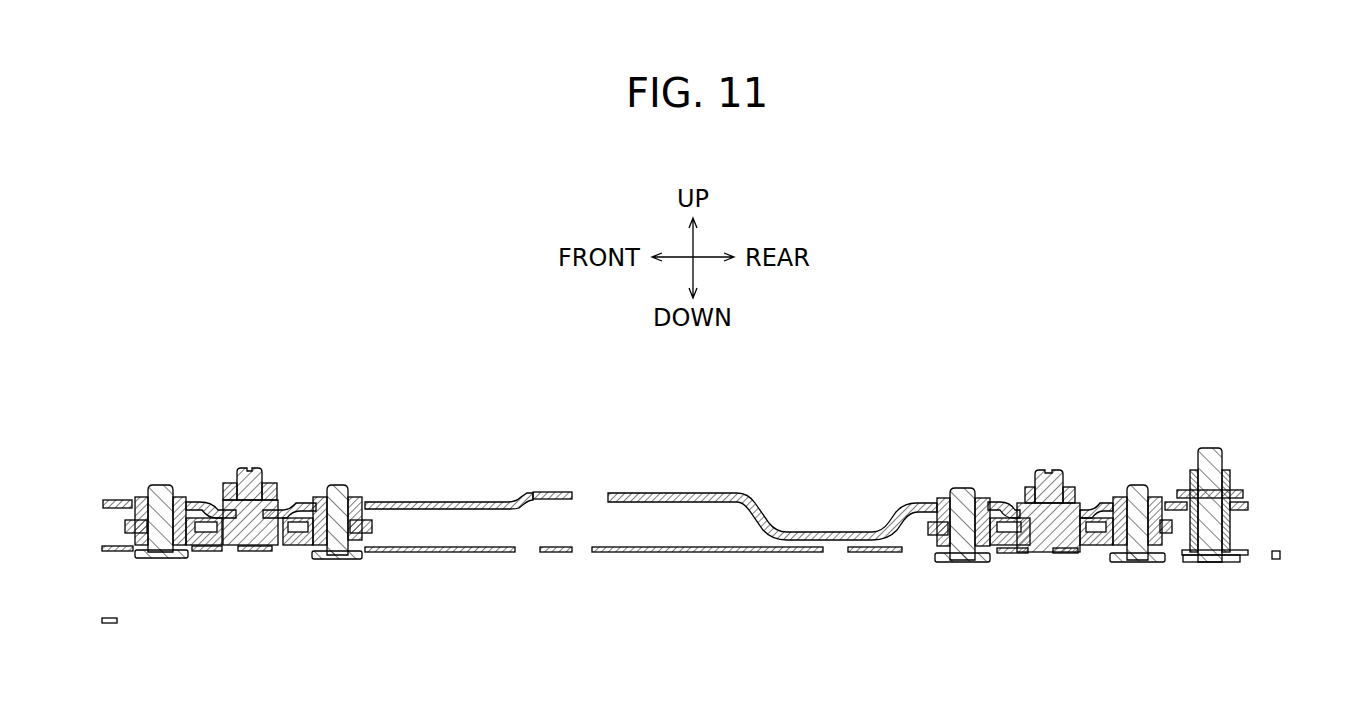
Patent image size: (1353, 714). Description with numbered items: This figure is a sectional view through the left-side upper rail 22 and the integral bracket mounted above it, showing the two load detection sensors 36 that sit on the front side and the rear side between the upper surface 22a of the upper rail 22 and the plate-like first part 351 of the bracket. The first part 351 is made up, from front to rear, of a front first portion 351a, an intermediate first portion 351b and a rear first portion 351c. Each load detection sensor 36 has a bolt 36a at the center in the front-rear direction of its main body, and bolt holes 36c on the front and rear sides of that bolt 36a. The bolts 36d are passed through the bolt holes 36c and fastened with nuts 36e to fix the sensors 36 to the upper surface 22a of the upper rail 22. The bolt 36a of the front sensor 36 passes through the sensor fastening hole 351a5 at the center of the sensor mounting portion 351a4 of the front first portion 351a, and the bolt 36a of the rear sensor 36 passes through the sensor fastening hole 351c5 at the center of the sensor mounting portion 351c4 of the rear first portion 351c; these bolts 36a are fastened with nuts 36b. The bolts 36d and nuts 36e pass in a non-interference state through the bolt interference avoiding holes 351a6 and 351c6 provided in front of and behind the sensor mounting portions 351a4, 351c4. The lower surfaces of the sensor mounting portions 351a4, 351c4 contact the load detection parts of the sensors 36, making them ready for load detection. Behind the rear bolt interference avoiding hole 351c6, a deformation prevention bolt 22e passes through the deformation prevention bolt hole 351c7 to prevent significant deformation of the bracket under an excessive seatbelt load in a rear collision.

The left-side upper rail 22 is at (440, 556).
The upper surface 22a is at (608, 553).
The deformation prevention bolt 22e is at (1210, 448).
The load detection sensor 36 is at (116, 529).
The bolt 36a is at (262, 470).
The nut 36b is at (285, 500).
The bolt hole 36c is at (168, 535).
The bolt 36d is at (153, 484).
The nut 36e is at (145, 497).
The first part 351 is at (670, 487).
The front first portion 351a is at (290, 500).
The sensor mounting portion 351a4 is at (213, 505).
The sensor fastening hole 351a5 is at (249, 468).
The bolt interference avoiding hole 351a6 is at (182, 502).
The intermediate first portion 351b is at (552, 492).
The rear first portion 351c is at (1000, 493).
The sensor mounting portion 351c4 is at (1007, 503).
The sensor fastening hole 351c5 is at (1047, 530).
The bolt interference avoiding hole 351c6 is at (985, 497).
The deformation prevention bolt hole 351c7 is at (1228, 528).